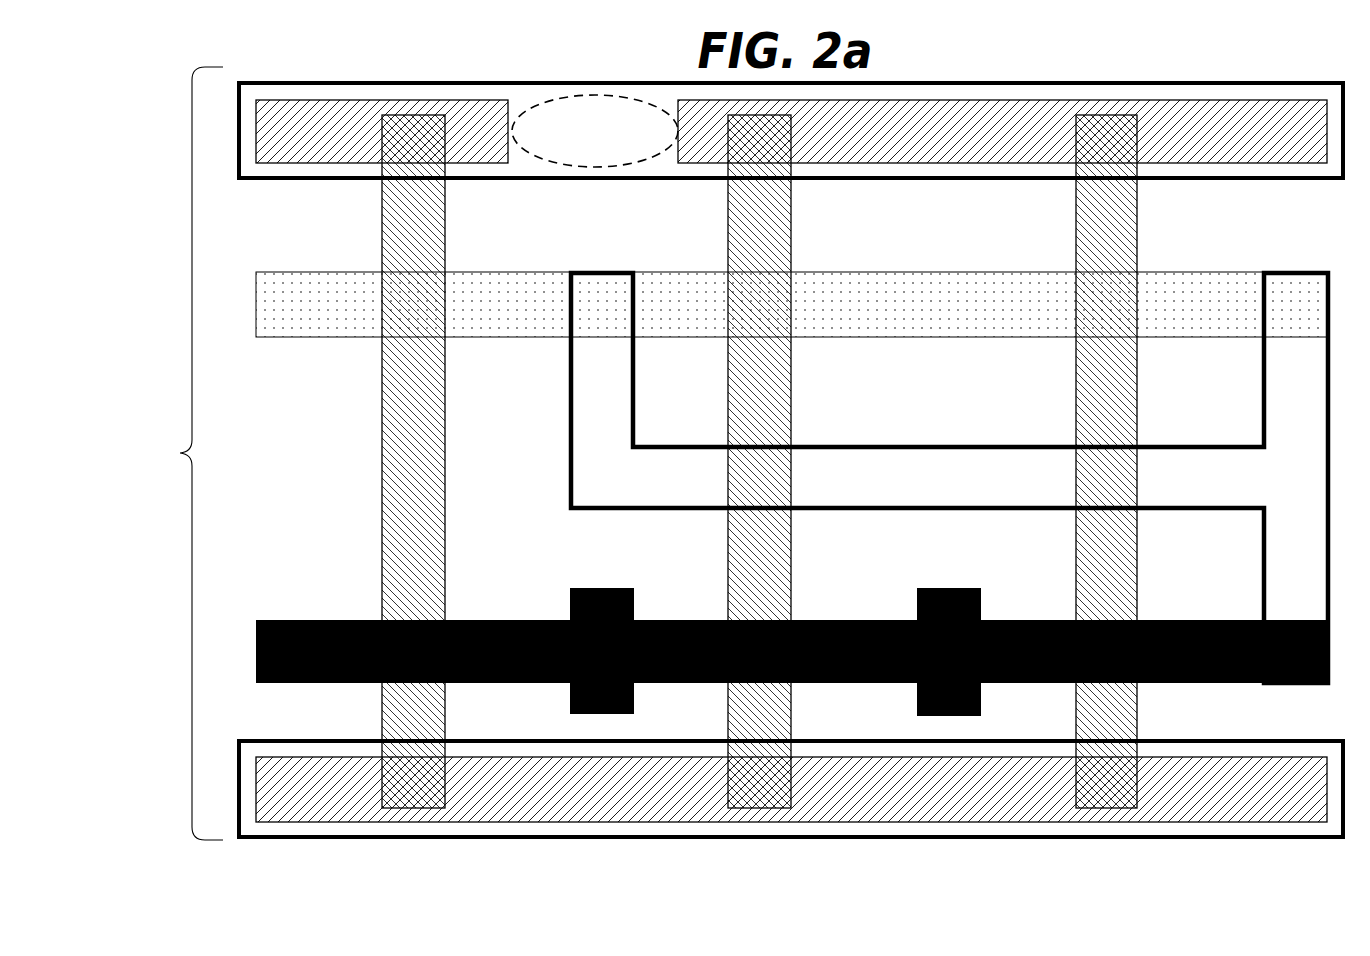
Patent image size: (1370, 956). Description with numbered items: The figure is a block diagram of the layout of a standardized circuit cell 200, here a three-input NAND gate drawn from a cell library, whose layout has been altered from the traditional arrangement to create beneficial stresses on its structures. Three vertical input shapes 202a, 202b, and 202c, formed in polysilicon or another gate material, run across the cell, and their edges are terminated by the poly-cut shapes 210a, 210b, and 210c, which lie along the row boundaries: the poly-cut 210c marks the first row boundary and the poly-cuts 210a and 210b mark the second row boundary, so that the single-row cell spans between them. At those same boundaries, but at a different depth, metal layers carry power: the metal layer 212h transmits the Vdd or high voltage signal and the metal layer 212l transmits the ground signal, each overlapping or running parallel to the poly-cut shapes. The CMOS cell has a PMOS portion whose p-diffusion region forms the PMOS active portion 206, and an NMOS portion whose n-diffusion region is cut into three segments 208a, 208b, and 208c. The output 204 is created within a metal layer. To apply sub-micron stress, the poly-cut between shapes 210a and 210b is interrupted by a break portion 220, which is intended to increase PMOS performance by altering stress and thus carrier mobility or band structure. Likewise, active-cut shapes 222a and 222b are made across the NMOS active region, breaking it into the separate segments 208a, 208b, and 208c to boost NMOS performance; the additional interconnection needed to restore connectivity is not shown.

The cell 200 is at (183, 453).
The first input 202a is at (432, 234).
The second input 202b is at (778, 234).
The third input 202c is at (1123, 234).
The output 204 is at (1311, 481).
The PMOS active portion 206 is at (1208, 313).
The first NMOS active segment 208a is at (523, 660).
The second NMOS active segment 208b is at (859, 660).
The third NMOS active segment 208c is at (1216, 660).
The first poly-cut shape 210a is at (310, 130).
The second poly-cut shape 210b is at (1318, 128).
The third poly-cut shape 210c is at (1316, 786).
The high voltage metal layer 212h is at (470, 84).
The ground metal layer 212l is at (258, 741).
The poly-cut break portion 220 is at (534, 162).
The first active-cut shape 222a is at (633, 588).
The second active-cut shape 222b is at (978, 587).